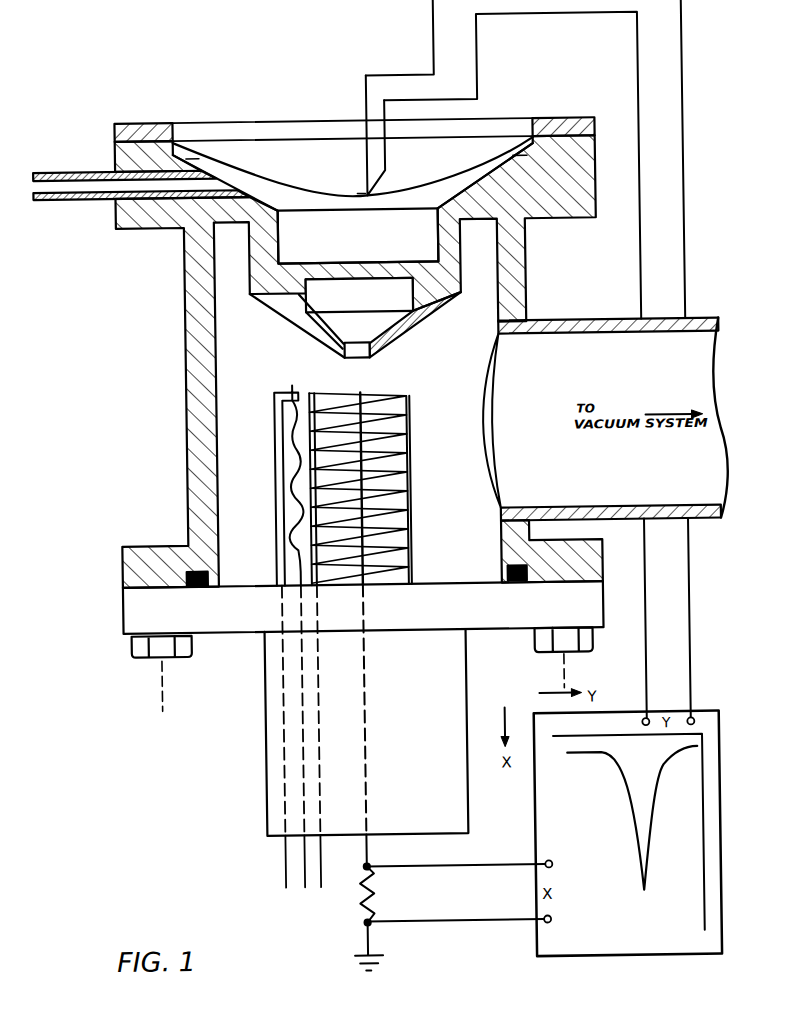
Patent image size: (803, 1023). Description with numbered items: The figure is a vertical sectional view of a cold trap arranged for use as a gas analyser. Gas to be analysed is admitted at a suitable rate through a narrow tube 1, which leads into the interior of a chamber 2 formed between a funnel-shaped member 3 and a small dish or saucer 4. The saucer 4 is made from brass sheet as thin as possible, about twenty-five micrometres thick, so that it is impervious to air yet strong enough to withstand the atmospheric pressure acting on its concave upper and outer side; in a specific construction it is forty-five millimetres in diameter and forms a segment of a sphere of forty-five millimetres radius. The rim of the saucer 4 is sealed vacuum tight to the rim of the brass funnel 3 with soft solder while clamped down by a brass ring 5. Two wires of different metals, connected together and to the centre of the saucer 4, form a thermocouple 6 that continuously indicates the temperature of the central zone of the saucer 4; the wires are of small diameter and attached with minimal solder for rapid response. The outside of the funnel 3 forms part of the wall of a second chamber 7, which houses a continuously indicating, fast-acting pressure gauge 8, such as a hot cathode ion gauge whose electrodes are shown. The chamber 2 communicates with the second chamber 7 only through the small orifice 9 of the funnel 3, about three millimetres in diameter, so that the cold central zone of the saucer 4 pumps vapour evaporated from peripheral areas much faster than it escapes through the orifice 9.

The narrow tube 1 is at (58, 166).
The chamber 2 is at (358, 235).
The funnel-shaped member 3 is at (308, 292).
The dish or saucer 4 is at (285, 185).
The brass ring 5 is at (151, 121).
The thermocouple 6 is at (364, 187).
The second chamber 7 is at (364, 614).
The pressure gauge 8 is at (412, 535).
The orifice 9 is at (364, 358).